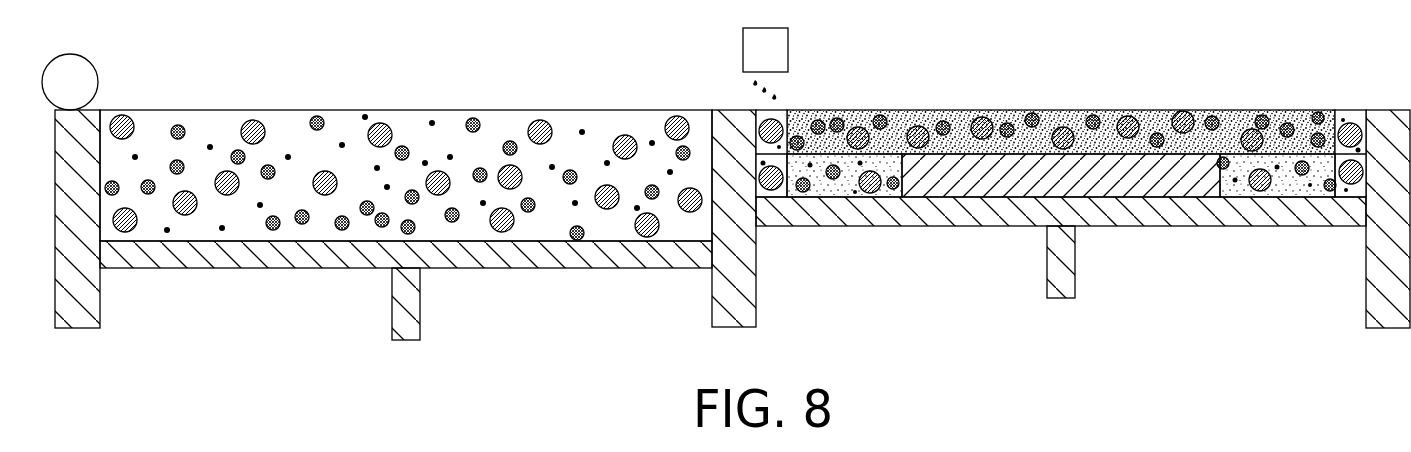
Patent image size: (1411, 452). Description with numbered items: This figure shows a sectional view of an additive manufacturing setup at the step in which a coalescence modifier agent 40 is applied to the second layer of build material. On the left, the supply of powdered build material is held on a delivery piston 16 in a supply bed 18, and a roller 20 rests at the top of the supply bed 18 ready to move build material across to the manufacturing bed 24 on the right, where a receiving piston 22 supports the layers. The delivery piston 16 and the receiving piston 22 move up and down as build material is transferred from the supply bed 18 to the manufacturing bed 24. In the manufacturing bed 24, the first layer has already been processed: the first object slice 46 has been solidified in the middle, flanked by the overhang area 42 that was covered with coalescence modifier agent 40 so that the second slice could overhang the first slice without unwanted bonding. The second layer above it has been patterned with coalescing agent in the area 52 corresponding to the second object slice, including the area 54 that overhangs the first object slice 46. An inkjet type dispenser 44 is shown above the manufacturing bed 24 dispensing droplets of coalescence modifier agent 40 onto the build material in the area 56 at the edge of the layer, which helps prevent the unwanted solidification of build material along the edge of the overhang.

The delivery piston 16 is at (410, 318).
The supply bed 18 is at (258, 270).
The roller 20 is at (82, 67).
The receiving piston 22 is at (1068, 275).
The manufacturing bed 24 is at (914, 215).
The coalescence modifier agent 40 is at (752, 84).
The overhang area 42 is at (820, 185).
The inkjet type dispenser 44 is at (777, 50).
The first object slice 46 is at (1173, 190).
The area corresponding to the second object slice 52 is at (1103, 110).
The overhanging area 54 is at (850, 110).
The area of coalescence modifier agent 56 is at (780, 110).